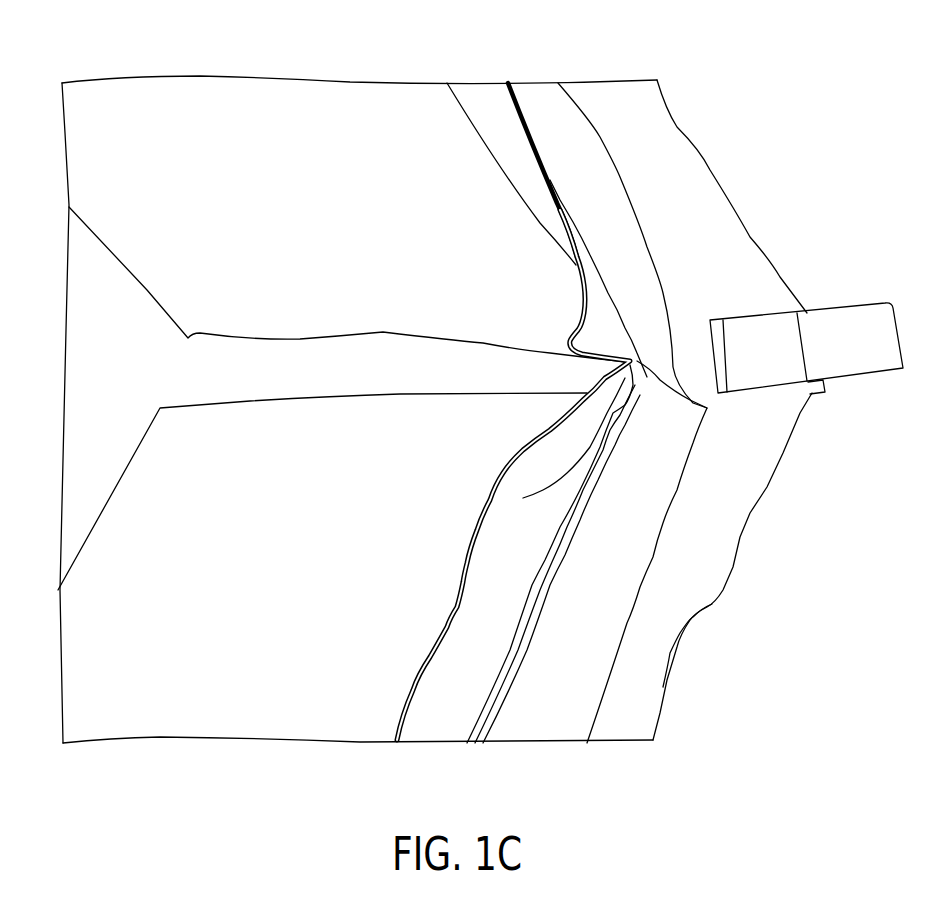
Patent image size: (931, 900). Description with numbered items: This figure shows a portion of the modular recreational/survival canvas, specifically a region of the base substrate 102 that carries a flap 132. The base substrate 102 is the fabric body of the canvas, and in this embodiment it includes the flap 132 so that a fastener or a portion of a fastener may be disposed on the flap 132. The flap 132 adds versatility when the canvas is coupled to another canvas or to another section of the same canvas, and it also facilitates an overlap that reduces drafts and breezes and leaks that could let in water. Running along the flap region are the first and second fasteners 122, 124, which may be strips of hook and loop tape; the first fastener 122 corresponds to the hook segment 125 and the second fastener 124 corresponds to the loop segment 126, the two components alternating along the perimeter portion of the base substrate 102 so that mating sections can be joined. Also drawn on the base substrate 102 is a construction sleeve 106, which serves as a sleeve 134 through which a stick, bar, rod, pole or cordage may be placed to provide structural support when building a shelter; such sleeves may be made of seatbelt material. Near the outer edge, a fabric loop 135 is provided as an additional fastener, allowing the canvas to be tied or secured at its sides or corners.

The base substrate 102 is at (85, 356).
The construction sleeve 106 is at (133, 91).
The sleeve 134 is at (177, 163).
The first fastener 122 is at (628, 241).
The hook segment 125 is at (502, 120).
The flap 132 is at (628, 363).
The second fastener 124 is at (632, 552).
The loop segment 126 is at (507, 548).
The fabric loop 135 is at (840, 353).